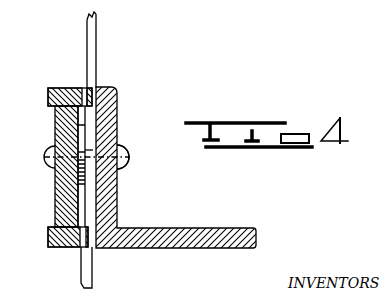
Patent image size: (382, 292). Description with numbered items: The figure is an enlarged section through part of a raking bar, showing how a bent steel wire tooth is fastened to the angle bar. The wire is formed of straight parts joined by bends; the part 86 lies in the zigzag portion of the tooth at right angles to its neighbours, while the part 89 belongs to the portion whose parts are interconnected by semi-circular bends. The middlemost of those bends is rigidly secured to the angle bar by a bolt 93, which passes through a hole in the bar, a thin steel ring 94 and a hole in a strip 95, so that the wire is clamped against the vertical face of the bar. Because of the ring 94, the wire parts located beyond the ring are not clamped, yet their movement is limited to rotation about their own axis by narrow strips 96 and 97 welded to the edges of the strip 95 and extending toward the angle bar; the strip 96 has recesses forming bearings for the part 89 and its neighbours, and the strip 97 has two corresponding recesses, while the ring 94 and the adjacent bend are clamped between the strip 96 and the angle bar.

The straight part of steel wire 89 is at (96, 44).
The narrow strip 96 is at (63, 90).
The bolt 93 is at (128, 158).
The strip 95 is at (61, 203).
The thin steel ring 94 is at (70, 184).
The narrow strip 97 is at (64, 248).
The straight part of steel wire 86 is at (92, 268).